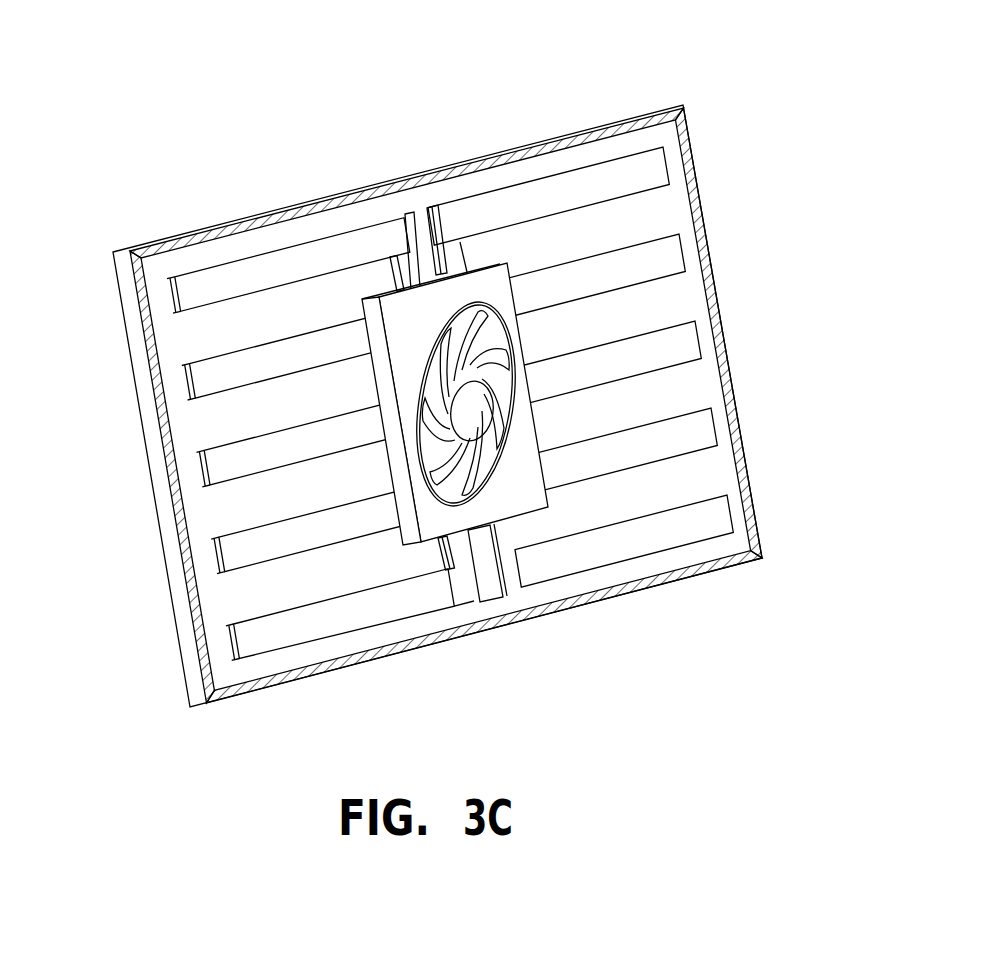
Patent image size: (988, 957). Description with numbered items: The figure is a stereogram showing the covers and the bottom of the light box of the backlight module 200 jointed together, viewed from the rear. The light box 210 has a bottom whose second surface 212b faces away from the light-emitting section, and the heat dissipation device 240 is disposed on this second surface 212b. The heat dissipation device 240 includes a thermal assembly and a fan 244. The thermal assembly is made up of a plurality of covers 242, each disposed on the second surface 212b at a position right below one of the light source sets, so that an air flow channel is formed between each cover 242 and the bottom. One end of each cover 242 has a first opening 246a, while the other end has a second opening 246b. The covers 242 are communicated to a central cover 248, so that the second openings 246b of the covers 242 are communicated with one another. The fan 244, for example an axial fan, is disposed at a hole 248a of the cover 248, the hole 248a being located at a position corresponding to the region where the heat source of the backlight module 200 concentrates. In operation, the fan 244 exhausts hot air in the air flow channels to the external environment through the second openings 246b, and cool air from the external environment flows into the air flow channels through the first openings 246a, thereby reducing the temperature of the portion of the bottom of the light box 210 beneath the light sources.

The backlight module 200 is at (760, 744).
The light box 210 is at (697, 148).
The second surface 212b is at (667, 119).
The heat dissipation device 240 is at (587, 724).
The cover 242 is at (537, 567).
The fan 244 is at (366, 407).
The first opening 246a is at (156, 297).
The second opening 246b is at (413, 269).
The cover 248 is at (396, 357).
The hole 248a is at (442, 328).